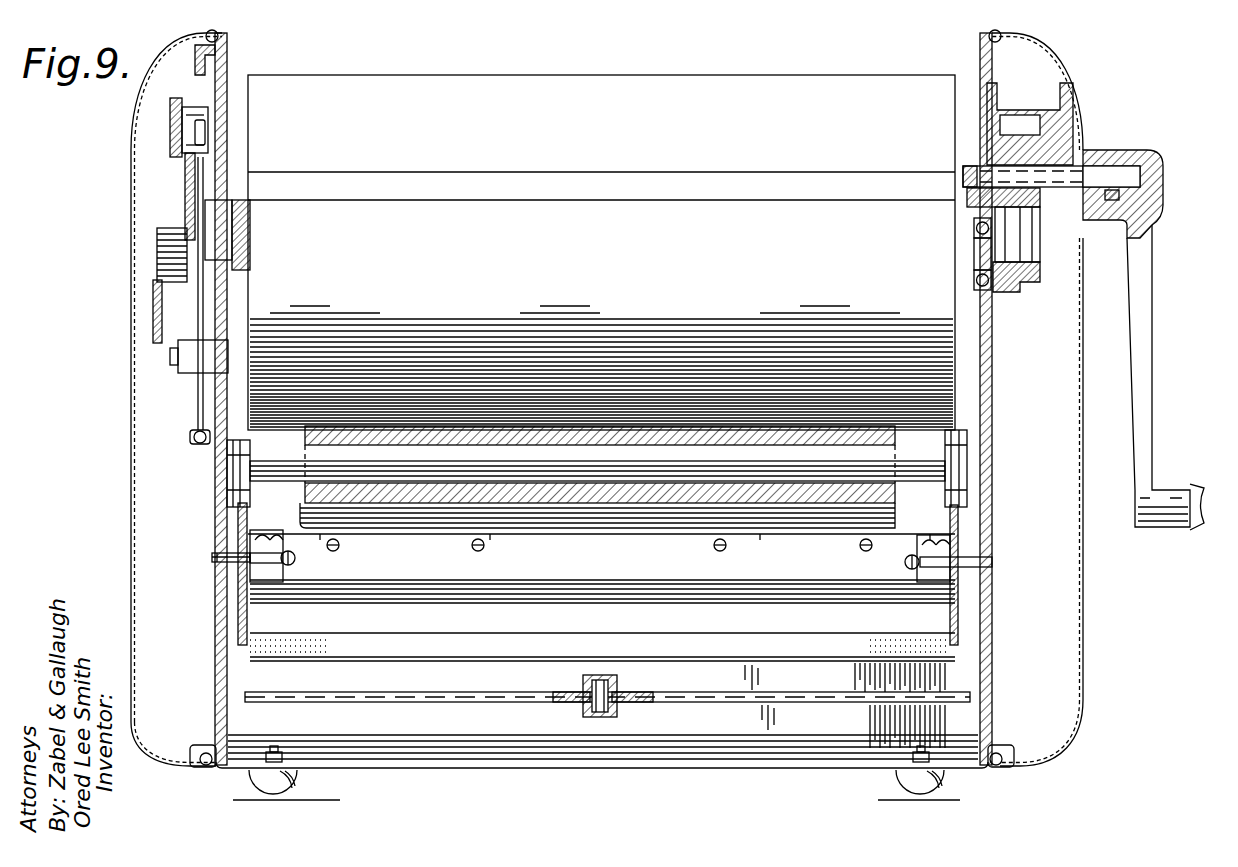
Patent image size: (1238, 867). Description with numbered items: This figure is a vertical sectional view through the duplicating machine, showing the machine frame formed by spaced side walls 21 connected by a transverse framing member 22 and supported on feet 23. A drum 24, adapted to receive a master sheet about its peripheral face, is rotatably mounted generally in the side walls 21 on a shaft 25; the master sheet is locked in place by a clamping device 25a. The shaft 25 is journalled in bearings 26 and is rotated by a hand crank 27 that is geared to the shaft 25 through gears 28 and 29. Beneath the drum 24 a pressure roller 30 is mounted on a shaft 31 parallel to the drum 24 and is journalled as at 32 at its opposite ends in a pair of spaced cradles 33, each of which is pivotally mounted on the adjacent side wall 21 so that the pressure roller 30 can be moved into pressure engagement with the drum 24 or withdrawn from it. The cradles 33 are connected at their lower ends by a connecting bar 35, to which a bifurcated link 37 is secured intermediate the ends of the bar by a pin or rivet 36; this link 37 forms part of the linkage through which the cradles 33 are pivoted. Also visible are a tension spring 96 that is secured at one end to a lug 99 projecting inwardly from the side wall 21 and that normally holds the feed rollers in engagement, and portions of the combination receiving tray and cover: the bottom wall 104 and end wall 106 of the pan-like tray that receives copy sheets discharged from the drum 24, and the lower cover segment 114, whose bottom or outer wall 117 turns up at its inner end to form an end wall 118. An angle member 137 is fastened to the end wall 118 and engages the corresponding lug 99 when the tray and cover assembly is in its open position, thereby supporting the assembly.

The side walls 21 is at (225, 487).
The transverse framing member 22 is at (652, 768).
The feet 23 is at (300, 782).
The drum 24 is at (793, 90).
The shaft 25 is at (975, 238).
The clamping device 25a is at (760, 190).
The bearings 26 is at (997, 290).
The hand crank 27 is at (1148, 283).
The gear 28 is at (1028, 135).
The gear 29 is at (1033, 276).
The pressure roller 30 is at (421, 495).
The shaft 31 is at (522, 470).
The journal 32 is at (240, 457).
The cradles 33 is at (240, 516).
The connecting bar 35 is at (433, 682).
The pin or rivet 36 is at (592, 714).
The bifurcated link 37 is at (612, 715).
The tension spring 96 is at (294, 560).
The lug 99 is at (230, 556).
The bottom wall 104 is at (790, 532).
The end wall 106 is at (612, 512).
The lower cover segment 114 is at (728, 585).
The outer wall 117 is at (603, 603).
The end wall 118 is at (458, 575).
The angle member 137 is at (265, 578).